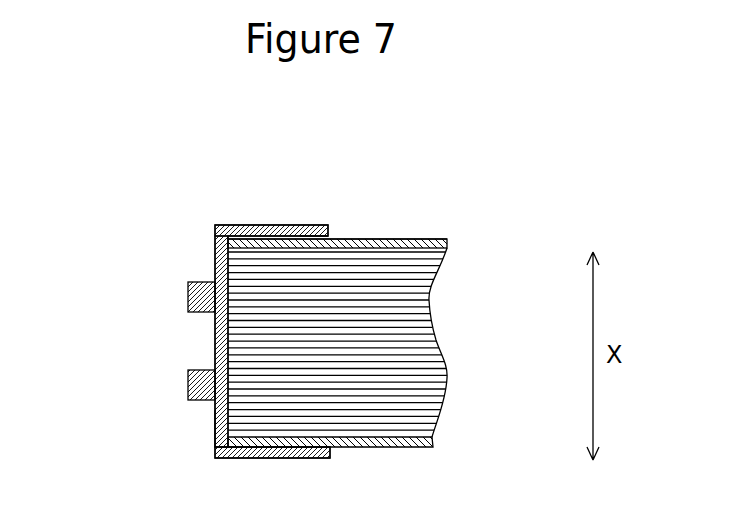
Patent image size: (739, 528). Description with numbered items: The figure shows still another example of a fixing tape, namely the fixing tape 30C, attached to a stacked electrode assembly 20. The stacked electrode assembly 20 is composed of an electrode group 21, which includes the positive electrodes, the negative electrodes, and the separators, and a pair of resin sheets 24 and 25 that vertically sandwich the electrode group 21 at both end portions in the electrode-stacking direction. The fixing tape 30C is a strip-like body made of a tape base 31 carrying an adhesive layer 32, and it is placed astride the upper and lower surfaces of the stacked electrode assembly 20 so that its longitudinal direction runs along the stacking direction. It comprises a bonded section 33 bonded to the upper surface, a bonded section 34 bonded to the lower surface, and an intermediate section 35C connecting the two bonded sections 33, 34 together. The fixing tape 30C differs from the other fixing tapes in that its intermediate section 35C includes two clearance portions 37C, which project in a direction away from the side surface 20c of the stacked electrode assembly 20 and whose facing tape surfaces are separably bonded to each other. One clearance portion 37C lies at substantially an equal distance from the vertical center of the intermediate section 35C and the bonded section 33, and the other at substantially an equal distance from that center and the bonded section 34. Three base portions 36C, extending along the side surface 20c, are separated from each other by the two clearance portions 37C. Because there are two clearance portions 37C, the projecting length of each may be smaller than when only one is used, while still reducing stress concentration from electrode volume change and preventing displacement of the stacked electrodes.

The stacked electrode assembly 20 is at (293, 301).
The side surface 20c is at (218, 420).
The electrode group 21 is at (417, 338).
The resin sheet 24 is at (442, 240).
The resin sheet 25 is at (420, 447).
The fixing tape 30C is at (213, 301).
The tape base 31 is at (320, 226).
The adhesive layer 32 is at (340, 238).
The bonded section 33 is at (300, 225).
The bonded section 34 is at (298, 458).
The intermediate section 35C is at (128, 334).
The base portion 36C is at (216, 252).
The clearance portion 37C is at (153, 353).